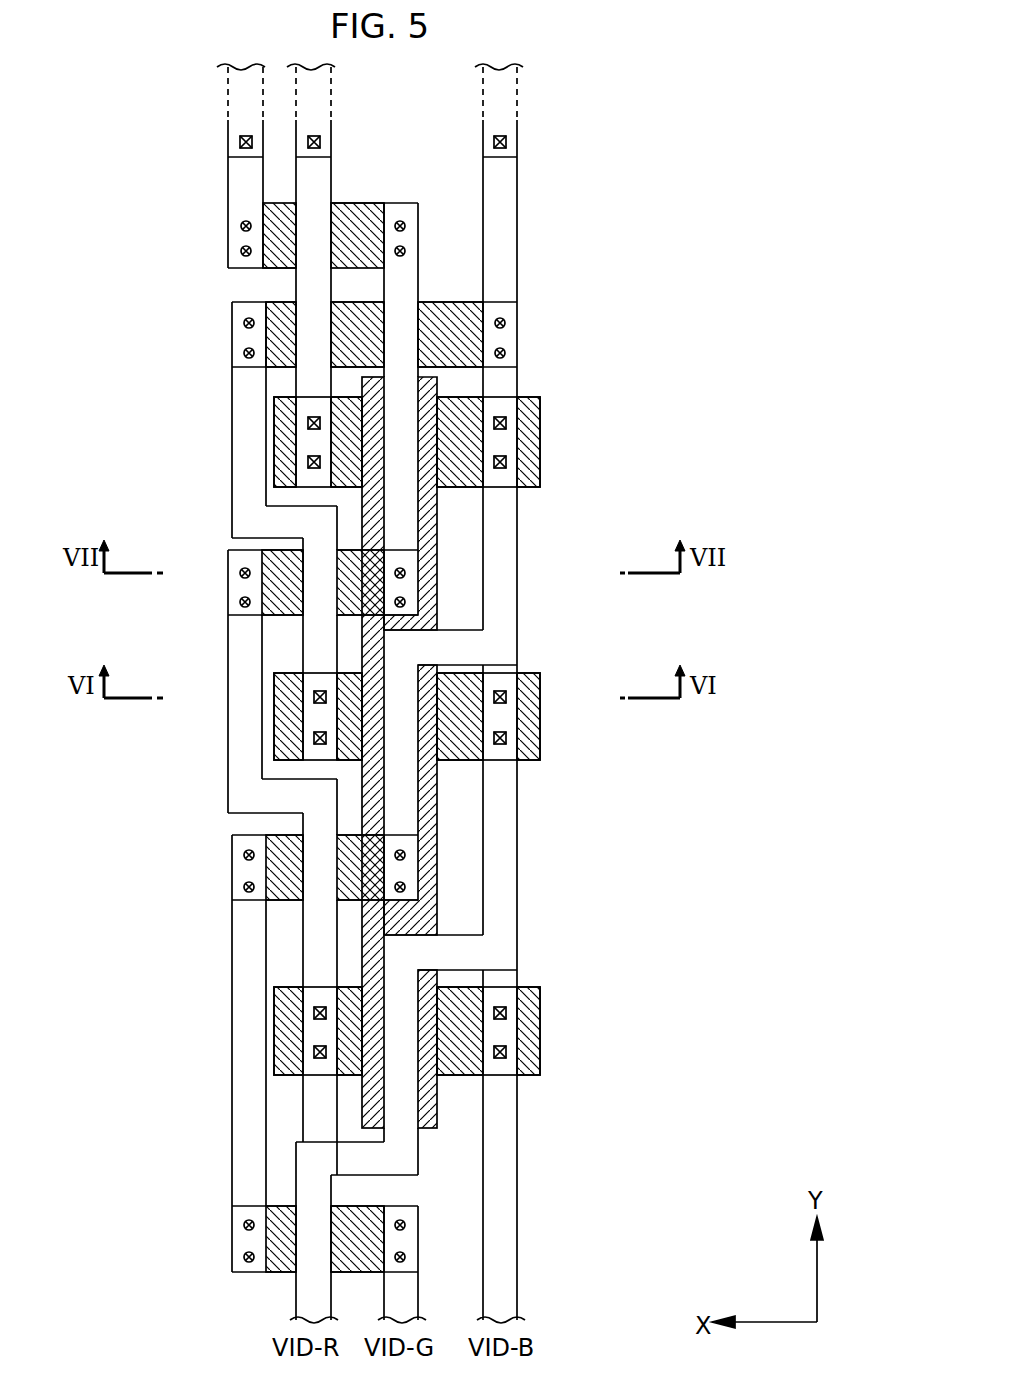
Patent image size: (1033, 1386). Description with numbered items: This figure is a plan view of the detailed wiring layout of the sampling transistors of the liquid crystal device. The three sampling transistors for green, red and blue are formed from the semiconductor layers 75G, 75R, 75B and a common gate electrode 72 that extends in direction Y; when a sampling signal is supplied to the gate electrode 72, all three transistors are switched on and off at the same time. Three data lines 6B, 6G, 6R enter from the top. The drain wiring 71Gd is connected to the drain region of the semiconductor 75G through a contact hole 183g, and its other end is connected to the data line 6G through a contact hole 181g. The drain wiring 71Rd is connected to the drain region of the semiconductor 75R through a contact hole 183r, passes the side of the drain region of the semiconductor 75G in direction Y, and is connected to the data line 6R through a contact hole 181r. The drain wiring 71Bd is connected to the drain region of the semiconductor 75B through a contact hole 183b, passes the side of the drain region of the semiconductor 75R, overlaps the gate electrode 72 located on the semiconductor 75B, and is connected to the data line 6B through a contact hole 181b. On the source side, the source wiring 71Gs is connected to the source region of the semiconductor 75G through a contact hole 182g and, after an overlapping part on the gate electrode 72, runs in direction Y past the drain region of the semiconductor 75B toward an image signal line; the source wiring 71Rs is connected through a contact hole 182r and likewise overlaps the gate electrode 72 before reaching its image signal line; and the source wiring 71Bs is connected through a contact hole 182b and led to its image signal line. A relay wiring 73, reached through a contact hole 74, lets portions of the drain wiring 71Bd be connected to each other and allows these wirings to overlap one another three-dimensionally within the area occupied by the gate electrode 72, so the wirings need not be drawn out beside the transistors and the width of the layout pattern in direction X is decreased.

The data line 6B is at (238, 97).
The data line 6G is at (325, 97).
The data line 6R is at (510, 97).
The contact hole 181b is at (240, 145).
The contact hole 181g is at (322, 145).
The contact hole 181r is at (508, 145).
The drain wiring 71Gd is at (310, 288).
The drain wiring 71Bd is at (408, 282).
The drain wiring 71Rd is at (243, 412).
The gate electrode 72 is at (373, 927).
The relay wiring 73 is at (282, 617).
The contact hole 74 is at (238, 571).
The semiconductor layer 75G is at (526, 397).
The semiconductor layer 75R is at (526, 673).
The semiconductor layer 75B is at (526, 987).
The contact hole 182g is at (512, 462).
The contact hole 182r is at (512, 738).
The contact hole 182b is at (512, 1052).
The contact hole 183g is at (306, 462).
The contact hole 183r is at (312, 738).
The contact hole 183b is at (312, 1052).
The source wiring 71Gs is at (510, 520).
The source wiring 71Rs is at (510, 800).
The source wiring 71Bs is at (510, 1118).